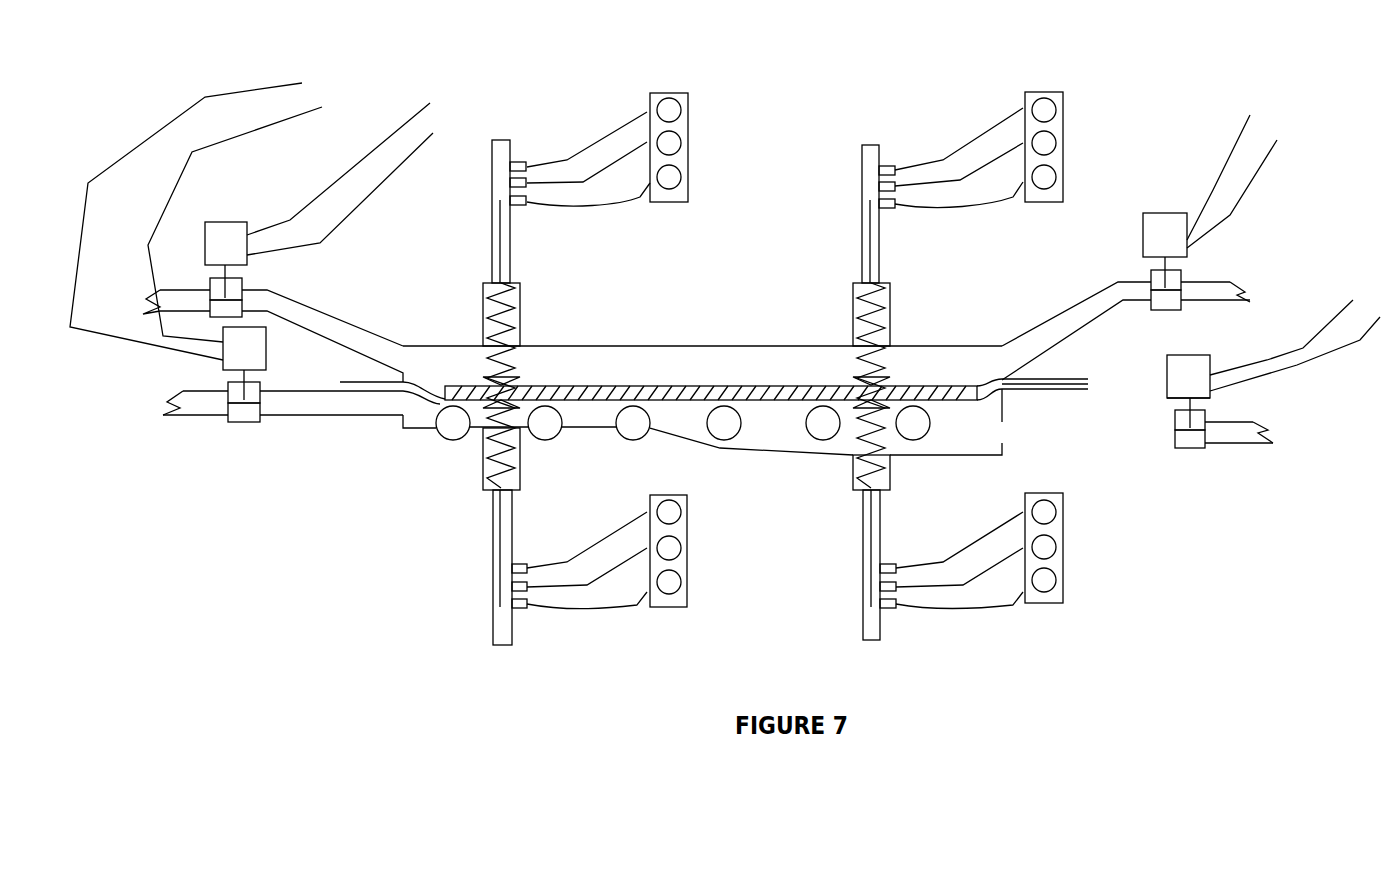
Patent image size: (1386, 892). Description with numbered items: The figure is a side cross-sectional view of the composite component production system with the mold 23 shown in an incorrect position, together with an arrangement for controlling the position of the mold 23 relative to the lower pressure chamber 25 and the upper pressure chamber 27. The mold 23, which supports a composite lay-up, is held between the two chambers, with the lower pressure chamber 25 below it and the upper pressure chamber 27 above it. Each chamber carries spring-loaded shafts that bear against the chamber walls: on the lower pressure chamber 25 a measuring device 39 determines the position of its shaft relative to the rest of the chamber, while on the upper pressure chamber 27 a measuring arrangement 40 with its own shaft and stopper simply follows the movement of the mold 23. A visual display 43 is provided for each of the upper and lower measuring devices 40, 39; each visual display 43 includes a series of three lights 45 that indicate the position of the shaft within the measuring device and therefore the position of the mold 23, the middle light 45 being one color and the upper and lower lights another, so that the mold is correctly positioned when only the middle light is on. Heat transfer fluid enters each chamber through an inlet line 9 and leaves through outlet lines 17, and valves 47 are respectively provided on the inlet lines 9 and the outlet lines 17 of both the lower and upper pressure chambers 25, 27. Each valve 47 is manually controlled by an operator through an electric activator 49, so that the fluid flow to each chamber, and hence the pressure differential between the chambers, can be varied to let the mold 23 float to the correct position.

The inlet line 9 is at (323, 322).
The outlet lines 17 is at (1213, 285).
The mold 23 is at (707, 383).
The lower pressure chamber 25 is at (758, 462).
The upper pressure chamber 27 is at (778, 335).
The measuring device 39 is at (460, 612).
The measuring arrangement 40 is at (486, 170).
The visual display 43 is at (684, 80).
The lights 45 is at (1165, 372).
The valves 47 is at (247, 282).
The electric activator 49 is at (232, 217).